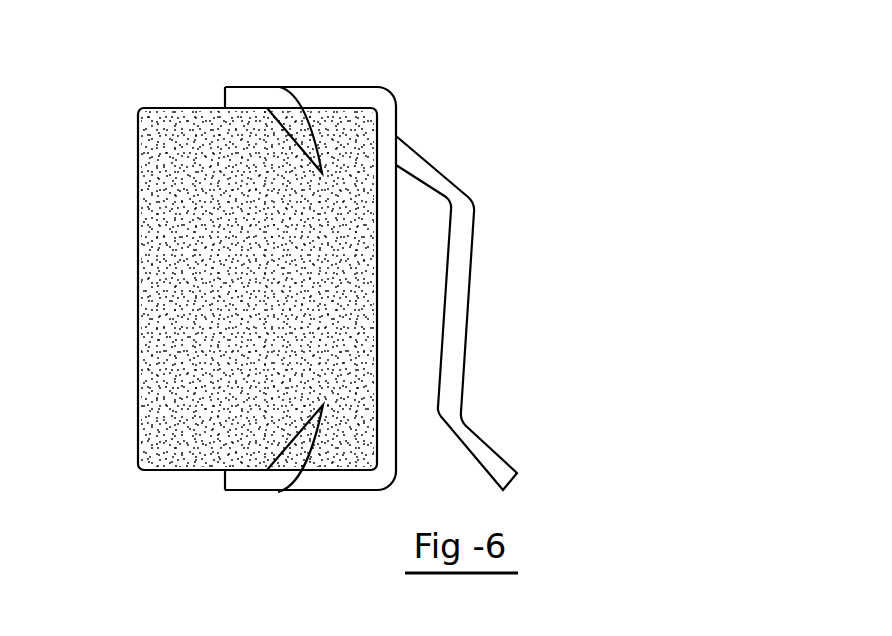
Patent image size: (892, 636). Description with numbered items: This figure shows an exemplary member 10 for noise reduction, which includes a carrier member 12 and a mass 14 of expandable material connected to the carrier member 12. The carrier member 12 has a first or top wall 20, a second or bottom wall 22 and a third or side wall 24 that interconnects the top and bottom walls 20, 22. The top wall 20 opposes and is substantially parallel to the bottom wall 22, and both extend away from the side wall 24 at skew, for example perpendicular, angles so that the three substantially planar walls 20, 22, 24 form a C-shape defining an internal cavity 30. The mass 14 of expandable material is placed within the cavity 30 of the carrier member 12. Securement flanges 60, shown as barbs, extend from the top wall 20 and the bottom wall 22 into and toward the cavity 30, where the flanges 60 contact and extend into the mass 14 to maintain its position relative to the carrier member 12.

The member 10 is at (377, 278).
The carrier member 12 is at (396, 421).
The mass of expandable material 14 is at (185, 292).
The first or top wall 20 is at (307, 87).
The second or bottom wall 22 is at (248, 492).
The third or side wall 24 is at (388, 293).
The cavity 30 is at (218, 289).
The securement flange 60 is at (302, 128).